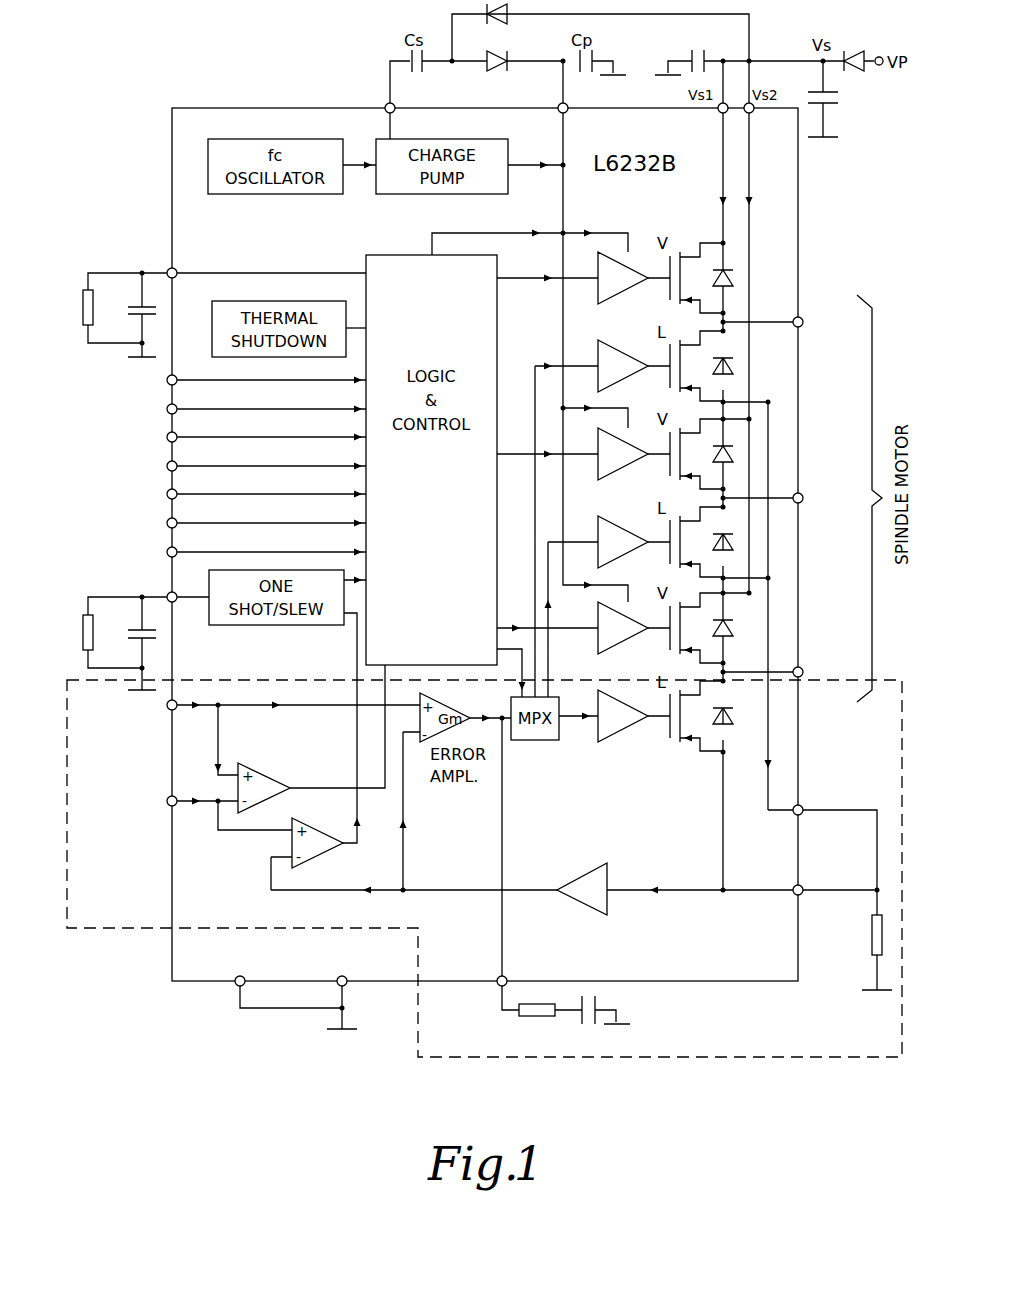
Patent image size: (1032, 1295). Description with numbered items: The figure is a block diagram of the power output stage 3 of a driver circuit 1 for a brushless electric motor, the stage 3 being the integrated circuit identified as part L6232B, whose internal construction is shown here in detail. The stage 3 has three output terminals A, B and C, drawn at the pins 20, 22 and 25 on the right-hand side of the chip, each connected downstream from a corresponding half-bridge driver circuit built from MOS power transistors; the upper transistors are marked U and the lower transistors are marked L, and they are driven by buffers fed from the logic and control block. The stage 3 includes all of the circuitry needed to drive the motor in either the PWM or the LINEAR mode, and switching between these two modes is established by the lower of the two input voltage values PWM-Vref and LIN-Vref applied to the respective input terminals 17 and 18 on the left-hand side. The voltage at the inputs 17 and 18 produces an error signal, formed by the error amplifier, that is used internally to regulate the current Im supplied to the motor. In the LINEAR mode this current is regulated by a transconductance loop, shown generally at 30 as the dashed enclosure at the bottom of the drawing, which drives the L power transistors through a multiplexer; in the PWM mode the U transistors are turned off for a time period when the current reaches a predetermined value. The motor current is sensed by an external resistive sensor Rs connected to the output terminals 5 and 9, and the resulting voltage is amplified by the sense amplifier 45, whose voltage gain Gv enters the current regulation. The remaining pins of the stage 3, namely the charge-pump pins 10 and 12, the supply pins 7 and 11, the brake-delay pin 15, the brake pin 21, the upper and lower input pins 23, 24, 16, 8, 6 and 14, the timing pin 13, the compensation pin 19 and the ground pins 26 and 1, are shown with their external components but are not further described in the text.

The power output stage 3 is at (285, 75).
The charge pump capacitor pin 10 is at (377, 121).
The charge pump output pin 12 is at (530, 352).
The supply voltage pin Vs1 7 is at (714, 173).
The supply voltage pin Vs2 11 is at (759, 348).
The brake delay pin 15 is at (212, 304).
The brake input pin 21 is at (248, 375).
The upper input A pin 23 is at (245, 404).
The upper input B pin 24 is at (245, 432).
The upper input C pin 16 is at (244, 461).
The lower input A pin 8 is at (246, 489).
The lower input B pin 6 is at (246, 518).
The lower input C pin 14 is at (246, 547).
The RC timing pin 13 is at (135, 630).
The input terminal 18 is at (255, 730).
The input terminal 17 is at (184, 805).
The output A pin 20 is at (790, 317).
The output B pin 22 is at (790, 493).
The output C pin 25 is at (790, 681).
The output terminal 5 is at (822, 840).
The output terminal 9 is at (807, 930).
The compensation pin 19 is at (537, 1005).
The ground pins 26 to 28 26 is at (267, 984).
The circuit 1 is at (350, 994).
The sense amplifier 45 is at (607, 868).
The transconductance loop 30 is at (723, 1060).